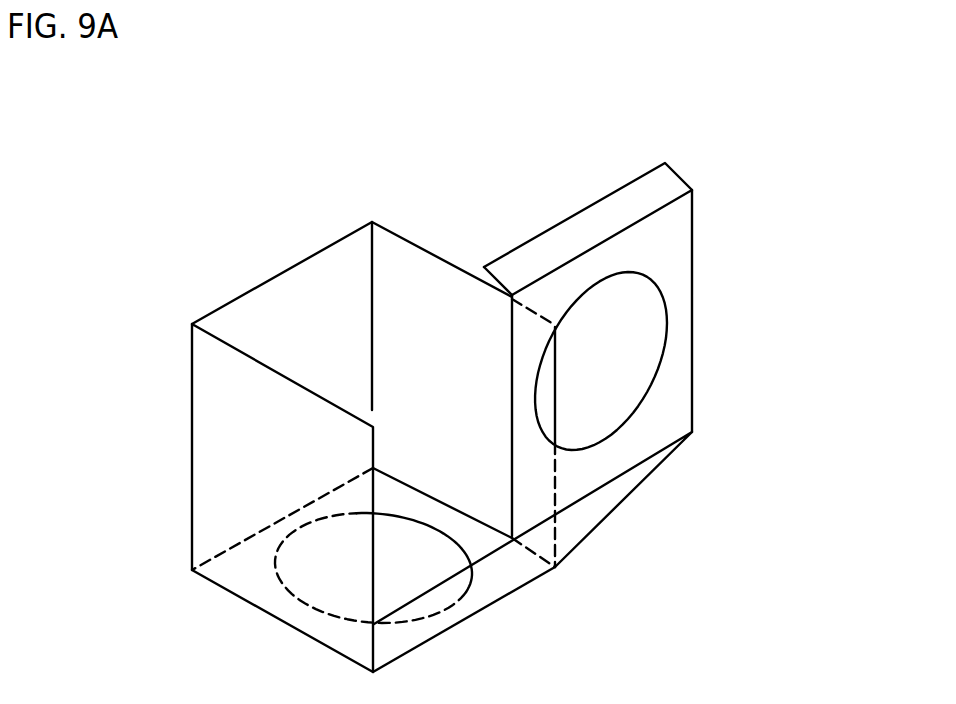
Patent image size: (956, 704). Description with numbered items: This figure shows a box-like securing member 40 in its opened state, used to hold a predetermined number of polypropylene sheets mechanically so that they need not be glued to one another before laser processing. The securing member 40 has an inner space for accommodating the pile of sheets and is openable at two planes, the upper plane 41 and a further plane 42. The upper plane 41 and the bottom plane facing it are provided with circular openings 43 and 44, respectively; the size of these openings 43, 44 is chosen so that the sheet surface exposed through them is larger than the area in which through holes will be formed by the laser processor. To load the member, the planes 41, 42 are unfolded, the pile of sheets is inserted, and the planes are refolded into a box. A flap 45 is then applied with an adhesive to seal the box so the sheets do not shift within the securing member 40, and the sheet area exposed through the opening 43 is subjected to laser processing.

The securing member 40 is at (297, 253).
The upper plane 41 is at (658, 252).
The plane 42 is at (507, 583).
The circular opening 43 is at (633, 350).
The circular opening 44 is at (407, 577).
The flap 45 is at (610, 207).